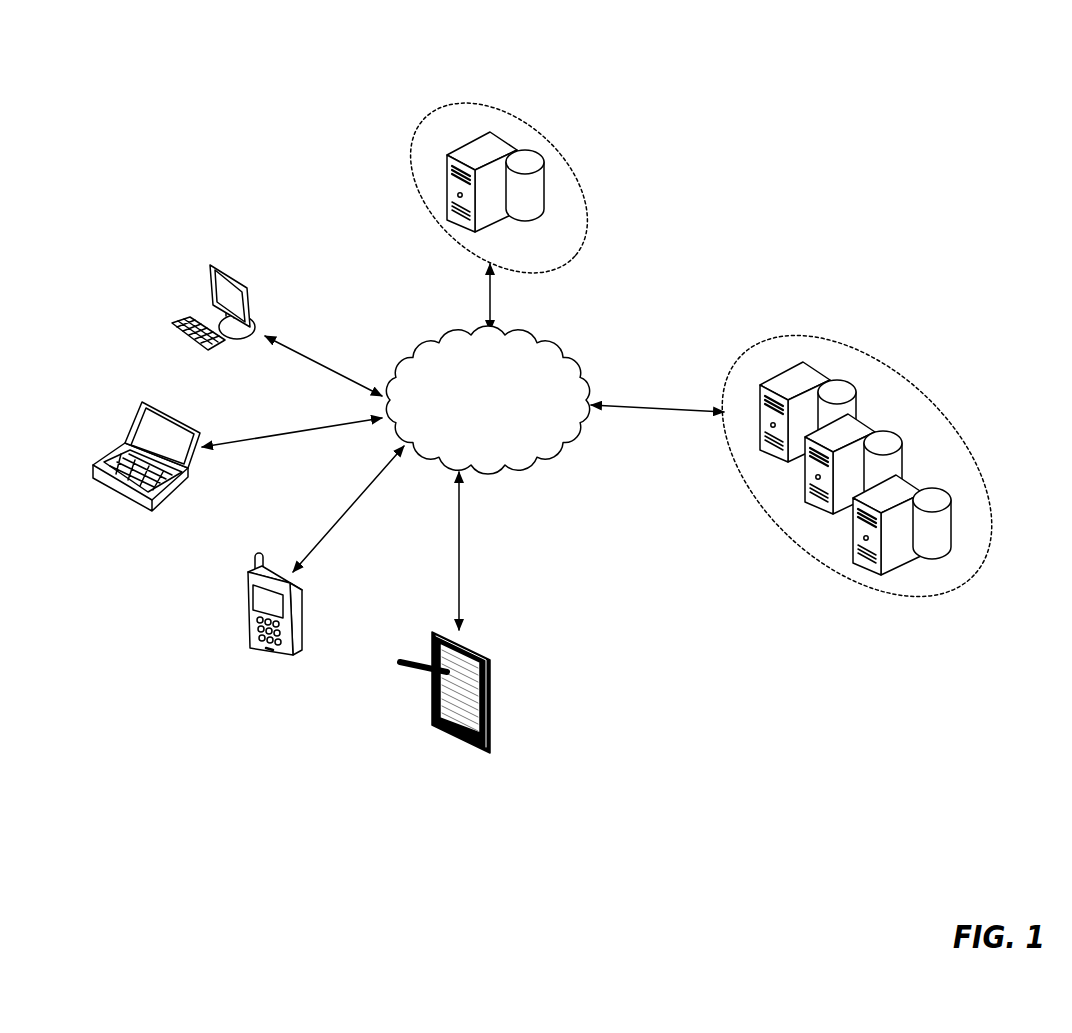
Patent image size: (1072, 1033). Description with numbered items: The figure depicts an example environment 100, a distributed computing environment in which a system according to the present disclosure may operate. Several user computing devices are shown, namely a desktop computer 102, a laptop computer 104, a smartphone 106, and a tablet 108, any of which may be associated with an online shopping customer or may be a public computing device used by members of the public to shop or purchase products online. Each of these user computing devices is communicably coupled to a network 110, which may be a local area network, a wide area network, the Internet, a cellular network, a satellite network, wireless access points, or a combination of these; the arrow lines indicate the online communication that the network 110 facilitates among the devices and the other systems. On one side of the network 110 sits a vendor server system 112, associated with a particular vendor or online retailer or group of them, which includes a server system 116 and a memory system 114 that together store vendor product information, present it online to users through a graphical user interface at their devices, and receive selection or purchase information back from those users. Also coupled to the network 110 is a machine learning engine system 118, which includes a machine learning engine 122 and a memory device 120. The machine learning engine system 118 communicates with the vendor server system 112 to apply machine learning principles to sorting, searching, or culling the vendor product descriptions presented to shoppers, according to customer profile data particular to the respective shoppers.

The environment 100 is at (802, 63).
The computing device 102 is at (255, 298).
The computing device 104 is at (200, 447).
The computing device 106 is at (302, 607).
The computing device 108 is at (492, 688).
The network 110 is at (488, 464).
The vendor server system 112 is at (857, 466).
The memory system 114 is at (836, 380).
The server system 116 is at (785, 370).
The machine learning engine system 118 is at (520, 184).
The memory device 120 is at (542, 168).
The machine learning engine 122 is at (487, 132).